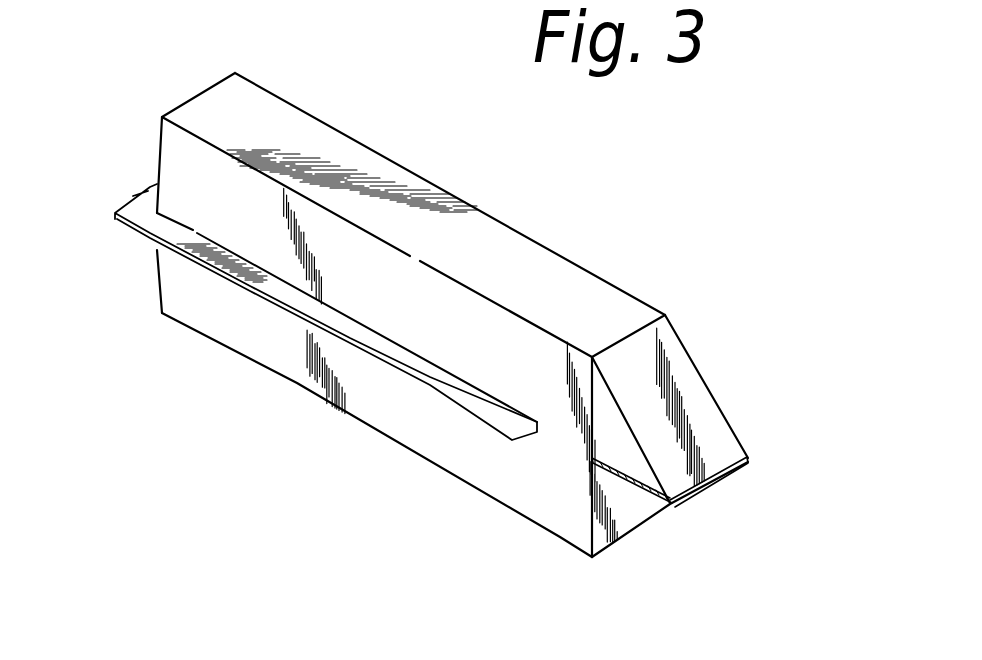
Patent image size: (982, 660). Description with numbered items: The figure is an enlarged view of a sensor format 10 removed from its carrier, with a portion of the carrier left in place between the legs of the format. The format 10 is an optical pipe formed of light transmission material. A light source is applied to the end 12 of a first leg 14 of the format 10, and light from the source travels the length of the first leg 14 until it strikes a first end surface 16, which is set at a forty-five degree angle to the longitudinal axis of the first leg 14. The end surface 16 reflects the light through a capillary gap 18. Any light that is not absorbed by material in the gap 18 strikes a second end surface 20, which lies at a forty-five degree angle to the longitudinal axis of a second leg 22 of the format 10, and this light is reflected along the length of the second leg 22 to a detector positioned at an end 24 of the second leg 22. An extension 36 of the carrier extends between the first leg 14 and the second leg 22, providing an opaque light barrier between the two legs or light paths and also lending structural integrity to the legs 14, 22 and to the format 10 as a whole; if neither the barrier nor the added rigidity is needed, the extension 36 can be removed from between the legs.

The sensor format 10 is at (381, 120).
The end of first leg 12 is at (183, 102).
The first leg 14 is at (390, 175).
The first end surface 16 is at (705, 403).
The capillary gap 18 is at (740, 473).
The second end surface 20 is at (647, 527).
The second leg 22 is at (295, 373).
The end of second leg 24 is at (157, 285).
The extension 36 is at (135, 232).